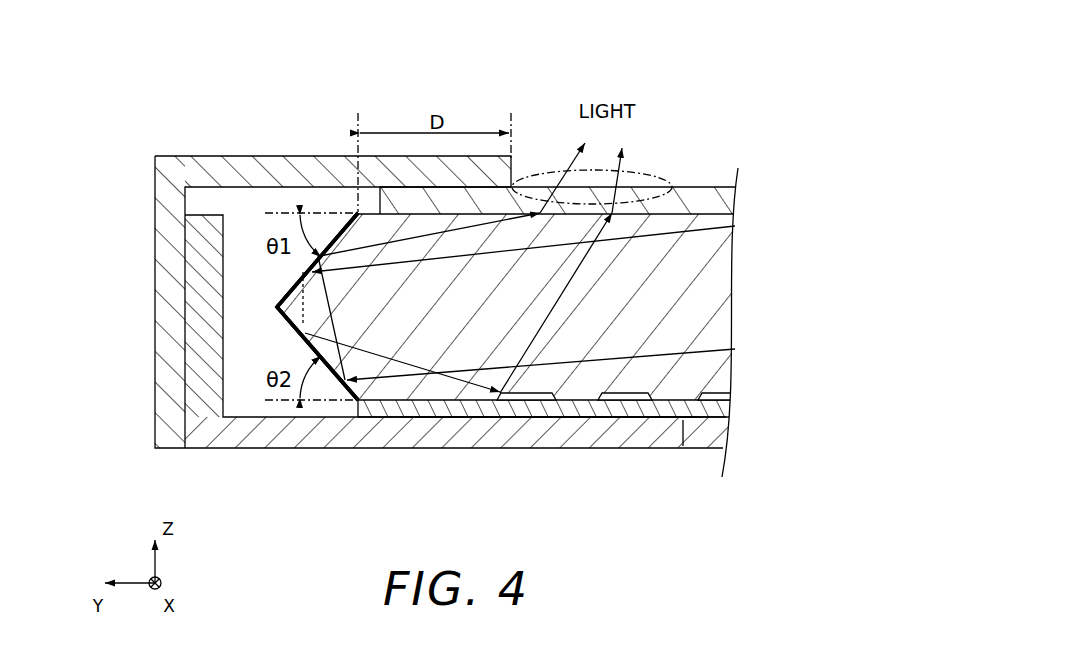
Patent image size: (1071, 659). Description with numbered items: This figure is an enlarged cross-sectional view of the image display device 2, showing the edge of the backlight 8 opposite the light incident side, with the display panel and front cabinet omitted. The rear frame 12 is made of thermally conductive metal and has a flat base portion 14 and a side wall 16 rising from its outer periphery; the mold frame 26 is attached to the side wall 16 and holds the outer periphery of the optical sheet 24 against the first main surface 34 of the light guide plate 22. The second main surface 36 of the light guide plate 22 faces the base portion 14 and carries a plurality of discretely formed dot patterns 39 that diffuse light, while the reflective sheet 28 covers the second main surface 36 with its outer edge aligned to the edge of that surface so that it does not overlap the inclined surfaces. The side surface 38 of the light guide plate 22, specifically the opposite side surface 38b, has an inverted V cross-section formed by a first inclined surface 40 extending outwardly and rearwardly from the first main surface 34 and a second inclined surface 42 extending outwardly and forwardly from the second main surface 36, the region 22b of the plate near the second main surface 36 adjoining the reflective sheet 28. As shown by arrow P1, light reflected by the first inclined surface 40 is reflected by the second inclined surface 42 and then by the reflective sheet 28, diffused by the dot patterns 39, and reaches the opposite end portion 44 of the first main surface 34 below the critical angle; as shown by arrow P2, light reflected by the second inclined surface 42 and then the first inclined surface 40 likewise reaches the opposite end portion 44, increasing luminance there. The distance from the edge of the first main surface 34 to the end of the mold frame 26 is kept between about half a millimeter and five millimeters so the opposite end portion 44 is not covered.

The optical module 2 is at (715, 98).
The backlight 8 is at (204, 150).
The rear frame 12 is at (205, 440).
The base portion 14 is at (518, 440).
The side wall 16 is at (195, 305).
The light guide plate 22 is at (710, 287).
The bottom surface of light guide body 22b is at (406, 403).
The optical sheet 24 is at (738, 170).
The mold frame 26 is at (255, 170).
The reflective sheet 28 is at (683, 446).
The first main surface 34 is at (718, 200).
The second main surface 36 is at (462, 410).
The side surface 38 is at (317, 306).
The opposite side surface 38b is at (310, 344).
The dot patterns 39 is at (628, 402).
The first inclined surface 40 is at (290, 288).
The second inclined surface 42 is at (303, 336).
The opposite end portion 44 is at (590, 163).
The arrow P1 is at (705, 232).
The arrow P2 is at (700, 351).